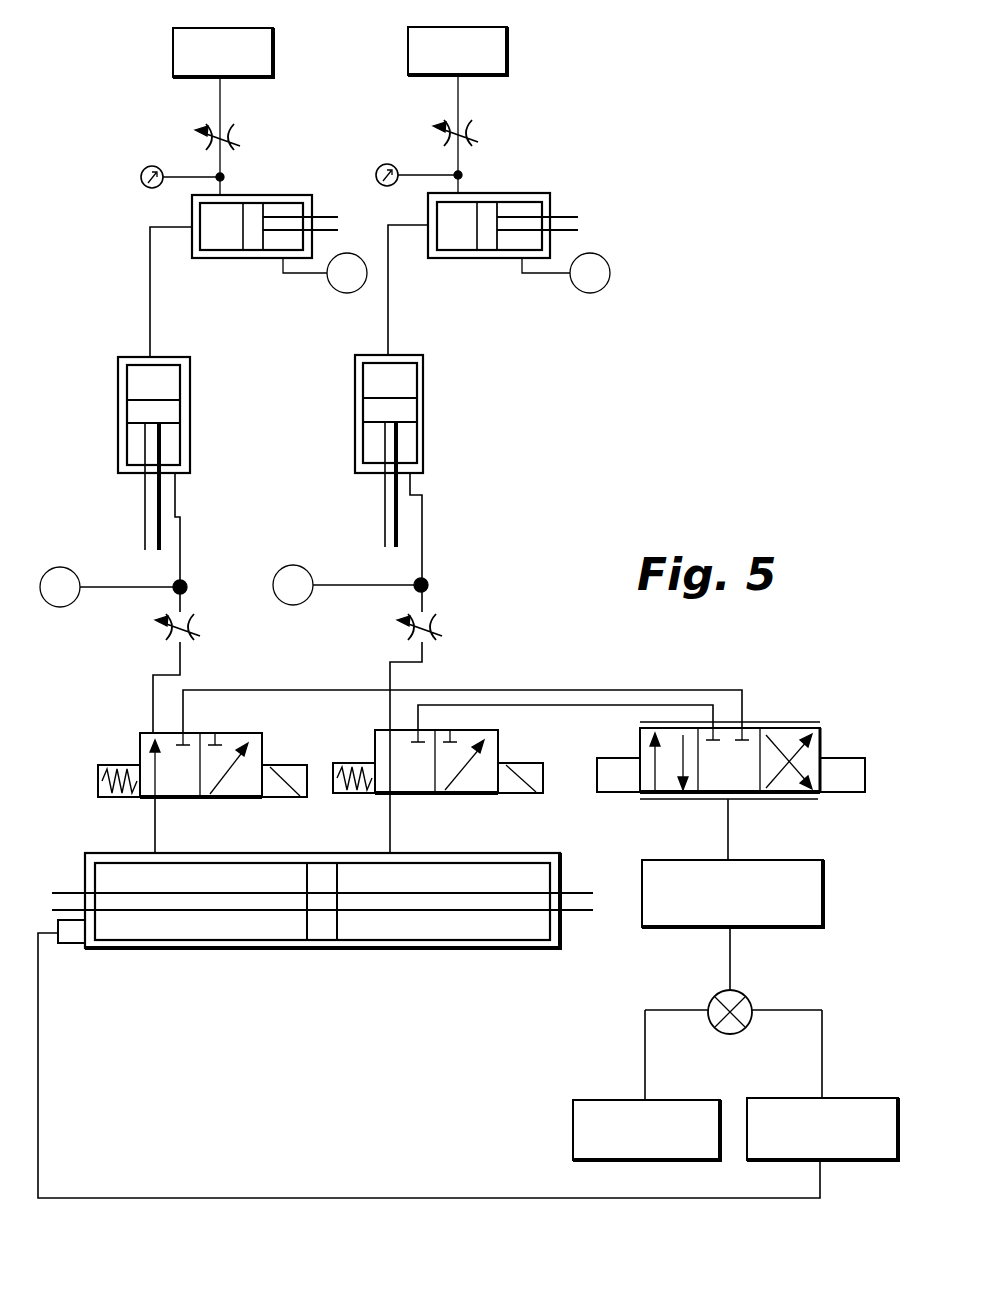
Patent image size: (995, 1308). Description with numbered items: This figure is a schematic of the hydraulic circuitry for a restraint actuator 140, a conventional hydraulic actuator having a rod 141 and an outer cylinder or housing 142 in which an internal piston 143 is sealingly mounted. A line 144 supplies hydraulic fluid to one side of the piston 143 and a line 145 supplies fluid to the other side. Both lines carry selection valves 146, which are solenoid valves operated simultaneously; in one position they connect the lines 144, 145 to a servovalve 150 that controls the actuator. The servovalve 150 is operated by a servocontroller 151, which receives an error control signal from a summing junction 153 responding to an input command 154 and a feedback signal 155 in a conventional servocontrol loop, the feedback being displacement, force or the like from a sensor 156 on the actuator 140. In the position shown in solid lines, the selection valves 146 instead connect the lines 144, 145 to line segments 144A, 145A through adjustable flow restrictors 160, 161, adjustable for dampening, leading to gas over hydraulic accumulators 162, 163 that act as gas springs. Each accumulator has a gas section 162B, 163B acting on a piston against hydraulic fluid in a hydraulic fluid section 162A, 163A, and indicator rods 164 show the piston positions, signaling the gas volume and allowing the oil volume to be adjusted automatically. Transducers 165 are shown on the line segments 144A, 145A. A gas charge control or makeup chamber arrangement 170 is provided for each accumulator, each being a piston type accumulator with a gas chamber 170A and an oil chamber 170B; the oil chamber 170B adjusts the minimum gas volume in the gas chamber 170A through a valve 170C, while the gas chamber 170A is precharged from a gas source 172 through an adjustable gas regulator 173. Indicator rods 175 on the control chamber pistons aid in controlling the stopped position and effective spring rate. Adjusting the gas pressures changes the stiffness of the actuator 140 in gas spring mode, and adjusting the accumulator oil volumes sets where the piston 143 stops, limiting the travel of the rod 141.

The actuator 140 is at (135, 950).
The rod 141 is at (575, 912).
The outer cylinder or housing 142 is at (548, 950).
The internal piston 143 is at (314, 918).
The line 144 is at (160, 838).
The line segment 144A is at (183, 567).
The line 145 is at (395, 838).
The line segment 145A is at (425, 567).
The selection valve 146 is at (225, 736).
The servovalve 150 is at (768, 736).
The servocontroller 151 is at (750, 858).
The summing junction 153 is at (750, 1000).
The input command 154 is at (618, 1164).
The feedback signal 155 is at (775, 1163).
The sensor 156 is at (62, 948).
The adjustable flow restrictor 160 is at (196, 627).
The adjustable flow restrictor 161 is at (438, 627).
The gas over hydraulic accumulator 162 is at (178, 415).
The hydraulic fluid section 162A is at (175, 462).
The gas section 162B is at (165, 375).
The gas over hydraulic accumulator 163 is at (405, 415).
The hydraulic fluid section 163A is at (415, 462).
The gas section 163B is at (405, 375).
The indicator rod 164 is at (146, 536).
The pressure transducer 165 is at (55, 608).
The gas charge control or makeup chamber arrangement 170 is at (426, 207).
The gas chamber 170A is at (236, 216).
The oil chamber 170B is at (280, 240).
The valve 170C is at (328, 285).
The gas source 172 is at (275, 53).
The adjustable gas regulator 173 is at (232, 122).
The indicator rod 175 is at (325, 216).